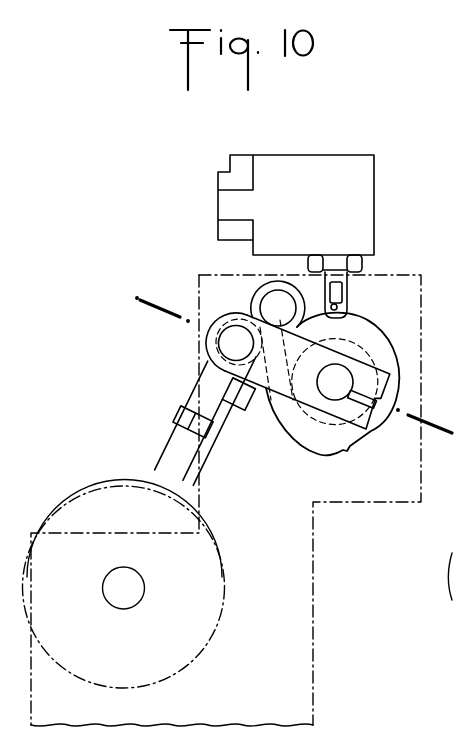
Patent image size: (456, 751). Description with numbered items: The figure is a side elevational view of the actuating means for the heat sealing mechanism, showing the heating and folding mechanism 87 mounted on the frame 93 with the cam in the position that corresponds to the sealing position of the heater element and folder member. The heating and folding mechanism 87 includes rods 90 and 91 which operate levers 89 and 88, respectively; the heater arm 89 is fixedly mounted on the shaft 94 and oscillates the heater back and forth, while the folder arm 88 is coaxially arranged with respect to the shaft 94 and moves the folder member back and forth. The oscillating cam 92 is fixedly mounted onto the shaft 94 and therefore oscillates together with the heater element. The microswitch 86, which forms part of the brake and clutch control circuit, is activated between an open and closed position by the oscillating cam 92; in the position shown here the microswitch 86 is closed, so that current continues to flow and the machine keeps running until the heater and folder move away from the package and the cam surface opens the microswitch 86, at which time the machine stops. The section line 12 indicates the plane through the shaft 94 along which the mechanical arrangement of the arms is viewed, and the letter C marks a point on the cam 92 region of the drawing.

The section line (view of FIG. 12) 12 is at (160, 312).
The microswitch 86 is at (386, 220).
The heating and folding mechanism 87 is at (133, 450).
The folder arm 88 is at (262, 300).
The heater arm 89 is at (279, 378).
The rod 90 is at (195, 470).
The rod 91 is at (172, 437).
The oscillating cam 92 is at (337, 442).
The frame 93 is at (300, 668).
The shaft 94 is at (328, 381).
The cam center C is at (290, 473).